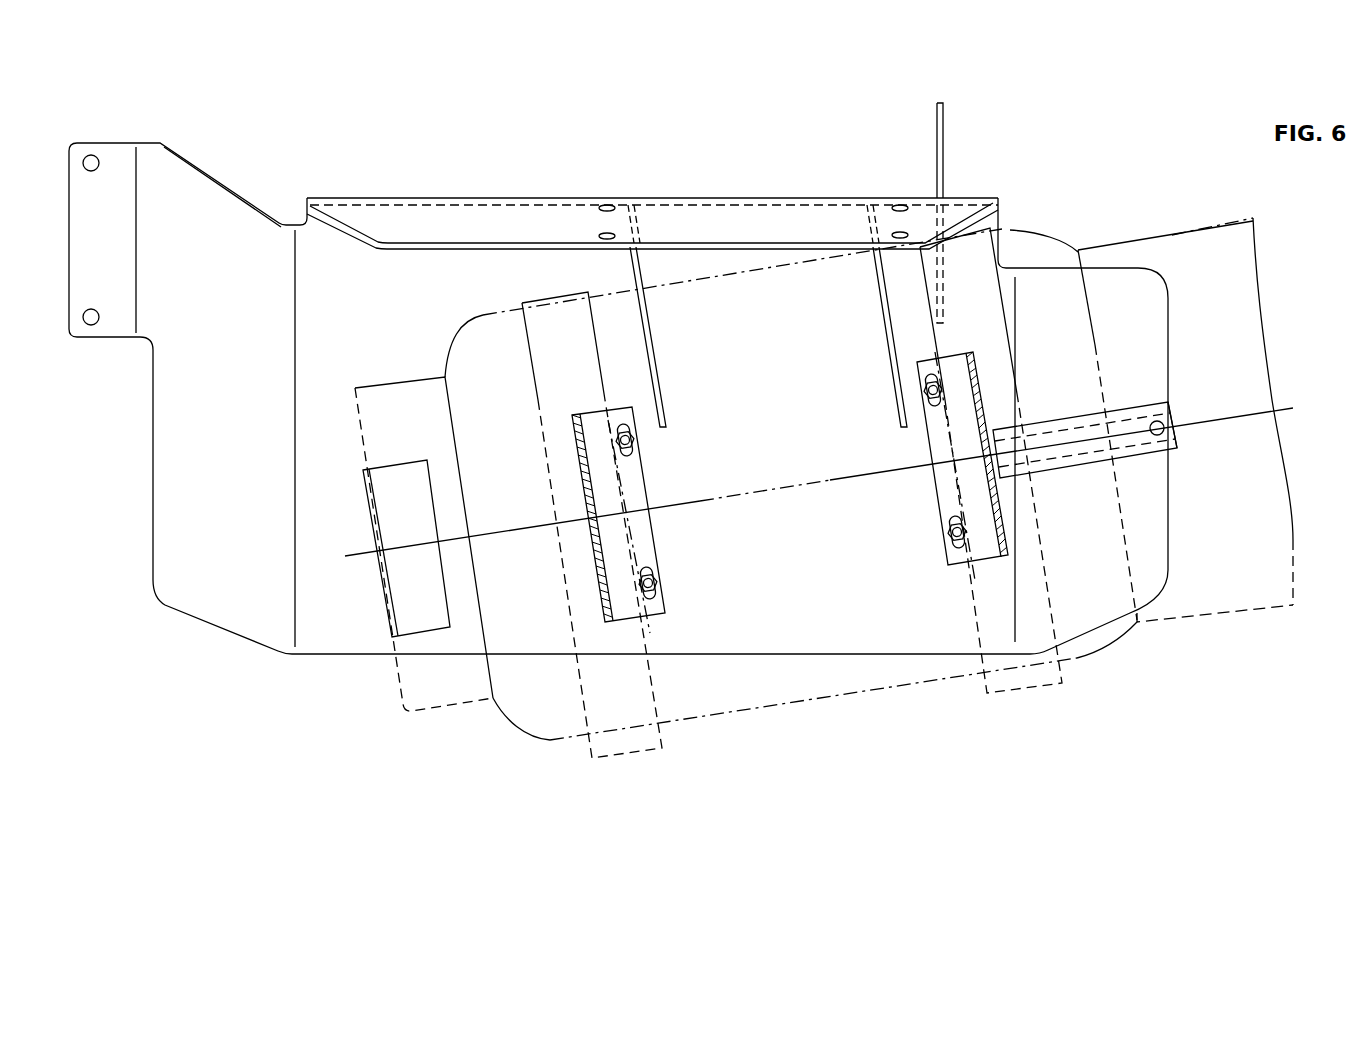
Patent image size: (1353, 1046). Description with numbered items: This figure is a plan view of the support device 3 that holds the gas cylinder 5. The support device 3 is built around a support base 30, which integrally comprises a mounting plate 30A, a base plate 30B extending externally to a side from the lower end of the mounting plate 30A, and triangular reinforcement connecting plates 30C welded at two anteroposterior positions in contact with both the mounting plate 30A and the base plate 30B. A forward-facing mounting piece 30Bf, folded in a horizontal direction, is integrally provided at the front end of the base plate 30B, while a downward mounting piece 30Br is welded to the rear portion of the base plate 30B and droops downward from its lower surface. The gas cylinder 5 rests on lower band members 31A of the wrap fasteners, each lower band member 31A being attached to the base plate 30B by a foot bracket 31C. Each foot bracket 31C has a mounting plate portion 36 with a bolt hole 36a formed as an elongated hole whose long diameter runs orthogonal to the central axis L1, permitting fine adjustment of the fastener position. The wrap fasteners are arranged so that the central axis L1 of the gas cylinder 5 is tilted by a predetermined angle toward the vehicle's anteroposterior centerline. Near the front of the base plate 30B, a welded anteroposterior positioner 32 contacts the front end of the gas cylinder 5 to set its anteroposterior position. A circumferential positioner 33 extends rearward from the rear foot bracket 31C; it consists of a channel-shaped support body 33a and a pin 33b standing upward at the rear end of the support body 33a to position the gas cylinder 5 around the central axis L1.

The support device 3 is at (437, 745).
The gas cylinder 5 is at (918, 683).
The support base 30 is at (372, 655).
The mounting plate 30A is at (547, 218).
The base plate 30B is at (810, 627).
The forward-facing mounting piece 30Bf is at (93, 326).
The downward mounting piece 30Br is at (943, 143).
The reinforcement connecting plate 30C is at (668, 388).
The lower band member 31A is at (537, 403).
The foot bracket 31C is at (593, 547).
The anteroposterior positioner 32 is at (368, 527).
The circumferential positioner 33 is at (1138, 406).
The support body 33a is at (1127, 462).
The pin 33b is at (1160, 402).
The mounting plate portion 36 is at (650, 613).
The bolt hole 36a is at (648, 565).
The central axis L1 is at (423, 547).